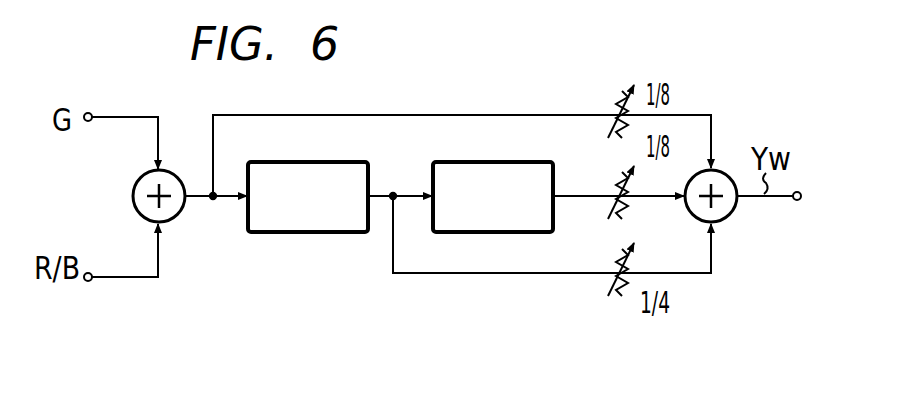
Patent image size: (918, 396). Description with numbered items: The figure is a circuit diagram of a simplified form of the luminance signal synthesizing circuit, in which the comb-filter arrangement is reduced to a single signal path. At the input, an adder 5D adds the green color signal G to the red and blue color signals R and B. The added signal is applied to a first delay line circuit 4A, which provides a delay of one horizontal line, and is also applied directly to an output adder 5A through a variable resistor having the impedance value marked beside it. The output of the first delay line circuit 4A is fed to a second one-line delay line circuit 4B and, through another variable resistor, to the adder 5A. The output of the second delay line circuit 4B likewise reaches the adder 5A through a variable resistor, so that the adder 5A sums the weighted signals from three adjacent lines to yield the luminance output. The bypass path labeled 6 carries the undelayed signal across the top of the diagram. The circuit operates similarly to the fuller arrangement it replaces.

The adder 5D is at (134, 208).
The 1H delay line circuit 4A is at (333, 234).
The 1H delay line circuit 4B is at (514, 231).
The adder 5A is at (731, 217).
The bypass signal line 6 is at (448, 104).